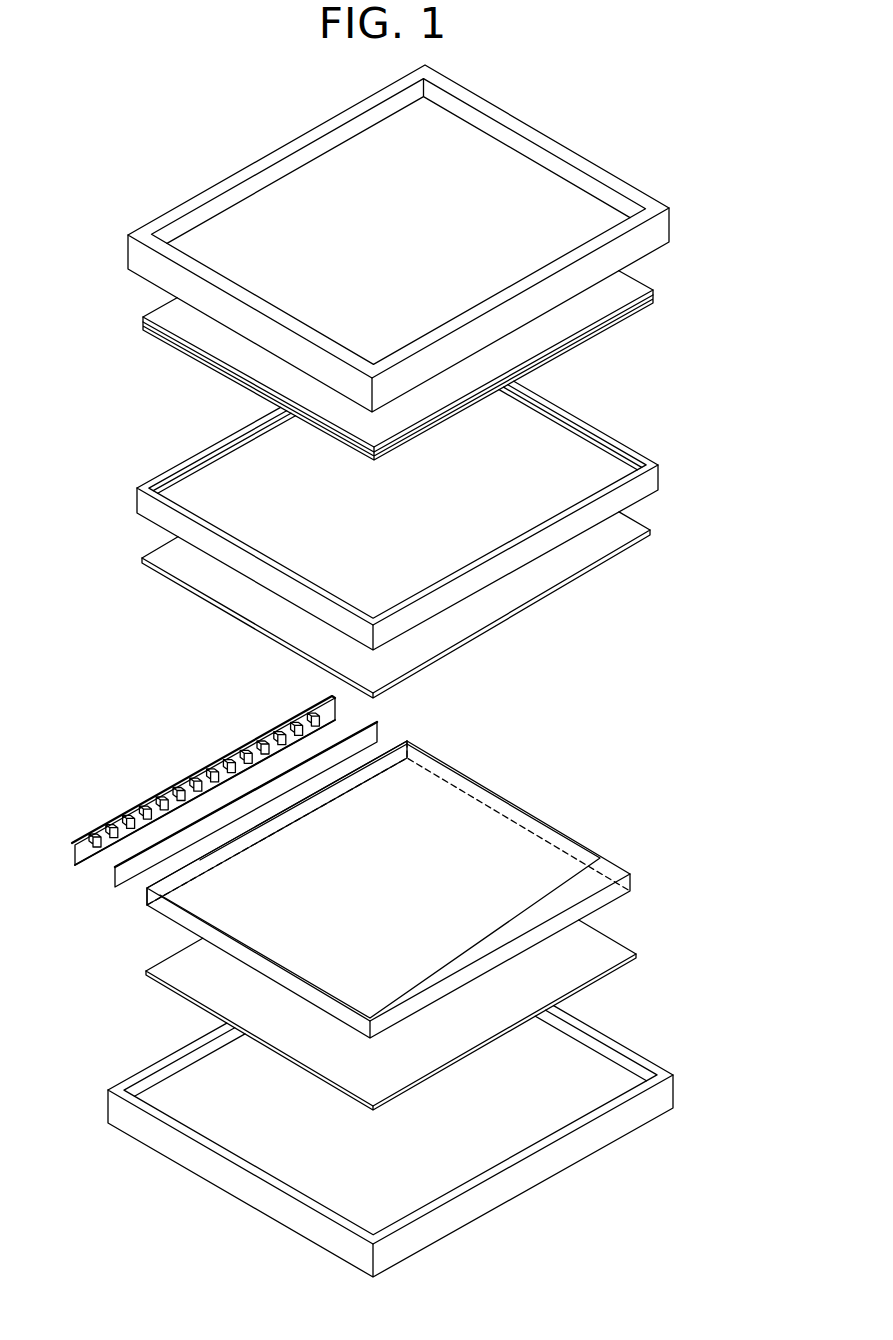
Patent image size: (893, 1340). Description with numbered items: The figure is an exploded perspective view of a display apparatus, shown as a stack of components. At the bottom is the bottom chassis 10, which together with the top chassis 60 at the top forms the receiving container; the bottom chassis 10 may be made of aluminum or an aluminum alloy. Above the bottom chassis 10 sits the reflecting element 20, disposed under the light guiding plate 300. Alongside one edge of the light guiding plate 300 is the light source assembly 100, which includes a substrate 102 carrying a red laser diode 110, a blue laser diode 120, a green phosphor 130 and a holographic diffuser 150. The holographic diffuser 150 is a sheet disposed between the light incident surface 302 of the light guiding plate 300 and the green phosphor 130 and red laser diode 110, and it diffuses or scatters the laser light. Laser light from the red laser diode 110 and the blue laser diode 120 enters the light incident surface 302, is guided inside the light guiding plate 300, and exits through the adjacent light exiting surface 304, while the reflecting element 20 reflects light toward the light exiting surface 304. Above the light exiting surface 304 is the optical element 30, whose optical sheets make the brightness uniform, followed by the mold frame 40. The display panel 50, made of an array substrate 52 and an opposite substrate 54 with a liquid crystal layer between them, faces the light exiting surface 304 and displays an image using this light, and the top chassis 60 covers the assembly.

The bottom chassis 10 is at (665, 1092).
The reflecting element 20 is at (636, 955).
The optical element 30 is at (650, 533).
The mold frame 40 is at (653, 478).
The display panel 50 is at (448, 361).
The array substrate 52 is at (427, 377).
The opposite substrate 54 is at (652, 290).
The top chassis 60 is at (663, 228).
The light source assembly 100 is at (220, 782).
The substrate 102 is at (217, 770).
The red laser diode 110 is at (163, 803).
The blue laser diode 120 is at (148, 807).
The green phosphor 130 is at (137, 807).
The holographic diffuser 150 is at (246, 787).
The light guiding plate 300 is at (388, 856).
The light incident surface 302 is at (387, 760).
The light exiting surface 304 is at (380, 874).